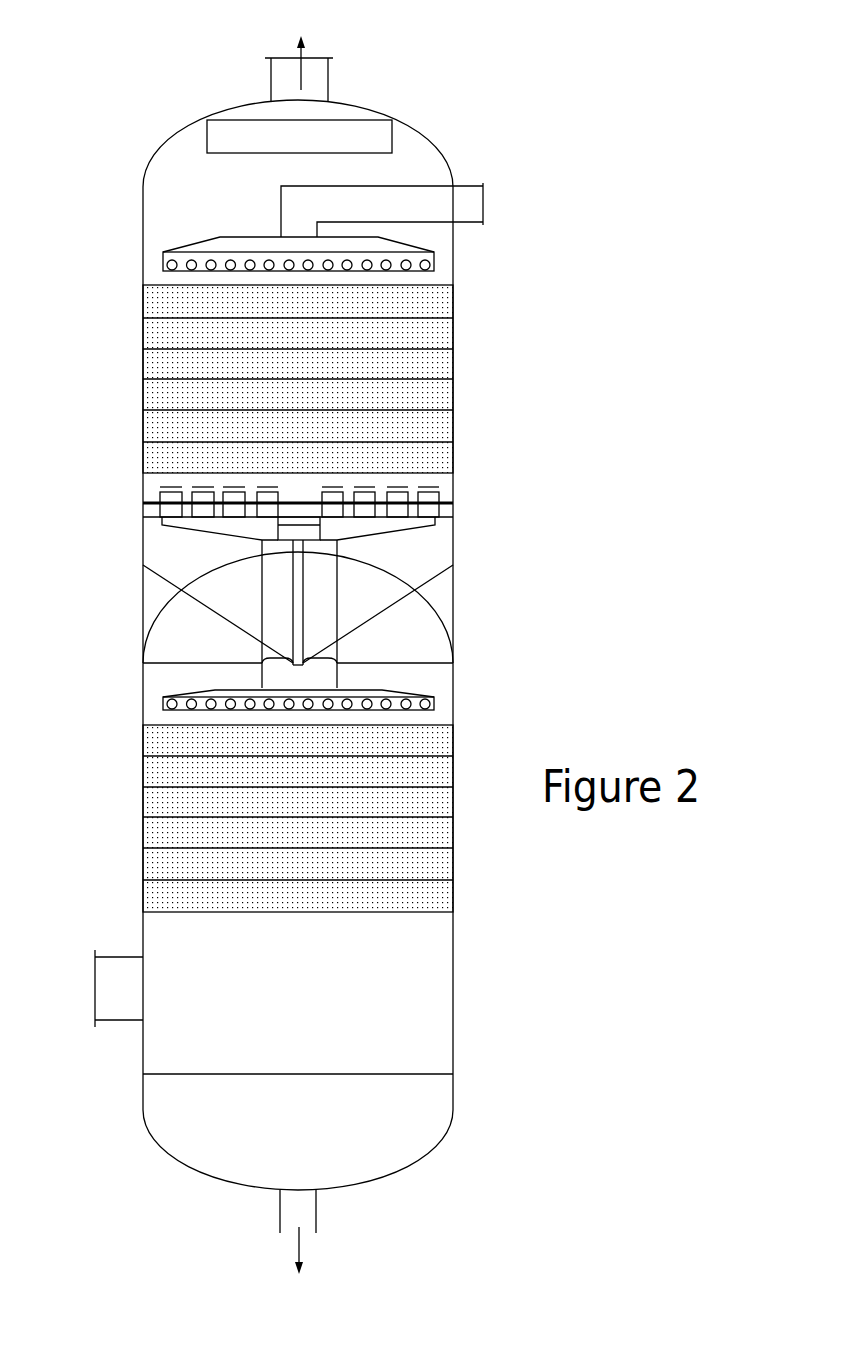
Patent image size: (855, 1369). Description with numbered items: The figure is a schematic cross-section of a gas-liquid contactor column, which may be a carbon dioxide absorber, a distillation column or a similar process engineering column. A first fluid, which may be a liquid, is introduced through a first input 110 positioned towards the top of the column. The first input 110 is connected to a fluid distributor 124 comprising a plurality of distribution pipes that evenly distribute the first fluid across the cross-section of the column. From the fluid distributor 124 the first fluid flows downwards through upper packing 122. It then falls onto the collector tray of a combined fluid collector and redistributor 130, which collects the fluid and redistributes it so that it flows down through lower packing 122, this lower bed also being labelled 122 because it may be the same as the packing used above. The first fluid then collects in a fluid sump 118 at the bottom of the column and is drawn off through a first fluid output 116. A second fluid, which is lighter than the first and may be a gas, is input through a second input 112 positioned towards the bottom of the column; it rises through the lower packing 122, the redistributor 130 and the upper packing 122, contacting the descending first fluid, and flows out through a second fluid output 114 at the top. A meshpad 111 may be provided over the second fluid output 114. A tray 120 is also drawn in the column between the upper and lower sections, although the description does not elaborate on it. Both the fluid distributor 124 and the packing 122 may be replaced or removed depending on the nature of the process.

The first input 110 is at (436, 205).
The meshpad 111 is at (393, 137).
The second input 112 is at (138, 986).
The second fluid output 114 is at (312, 60).
The first fluid output 116 is at (297, 1249).
The fluid sump 118 is at (415, 1108).
The chimney tray 120 is at (455, 501).
The packing 122 is at (445, 363).
The fluid distributor 124 is at (180, 252).
The combined fluid collector and redistributor 130 is at (250, 620).